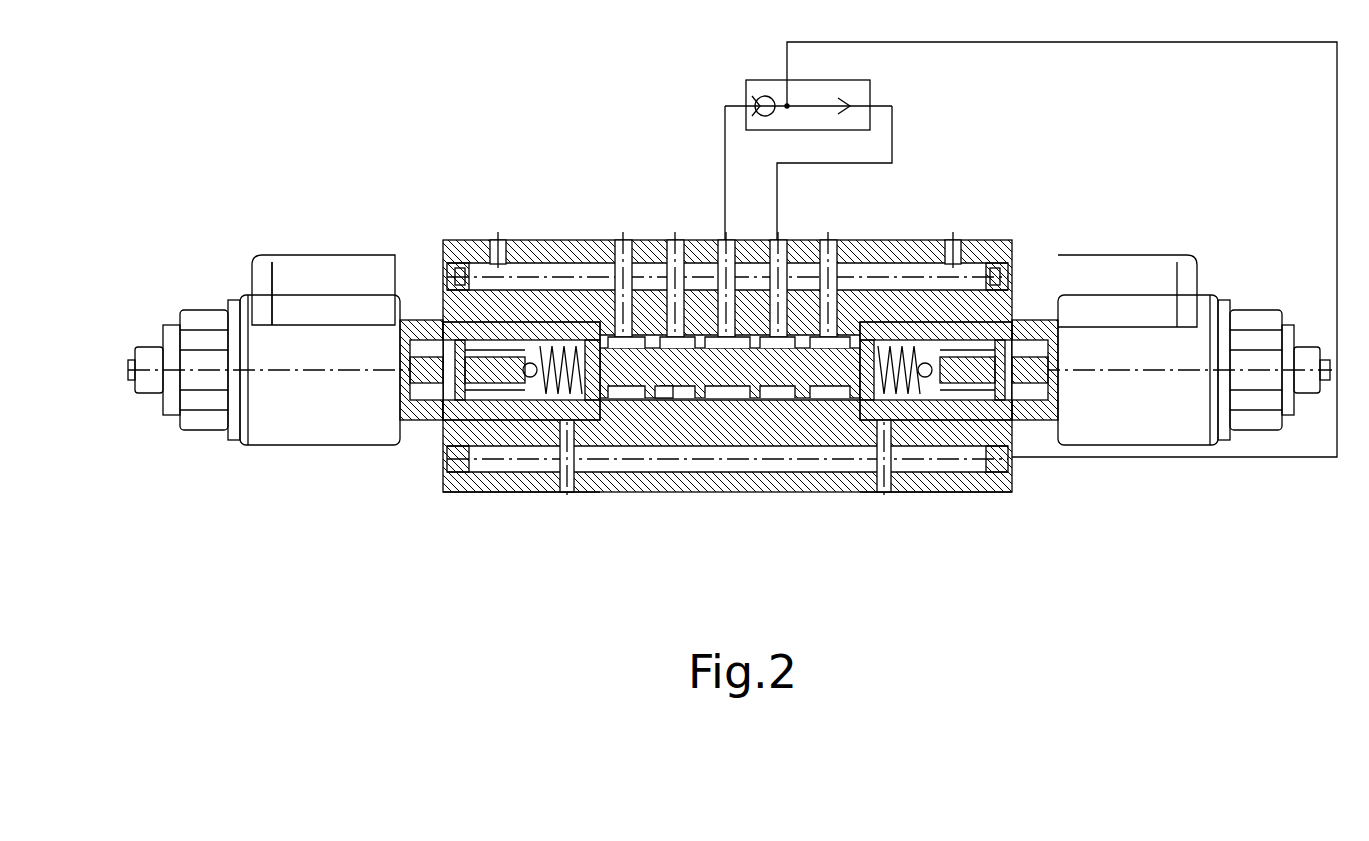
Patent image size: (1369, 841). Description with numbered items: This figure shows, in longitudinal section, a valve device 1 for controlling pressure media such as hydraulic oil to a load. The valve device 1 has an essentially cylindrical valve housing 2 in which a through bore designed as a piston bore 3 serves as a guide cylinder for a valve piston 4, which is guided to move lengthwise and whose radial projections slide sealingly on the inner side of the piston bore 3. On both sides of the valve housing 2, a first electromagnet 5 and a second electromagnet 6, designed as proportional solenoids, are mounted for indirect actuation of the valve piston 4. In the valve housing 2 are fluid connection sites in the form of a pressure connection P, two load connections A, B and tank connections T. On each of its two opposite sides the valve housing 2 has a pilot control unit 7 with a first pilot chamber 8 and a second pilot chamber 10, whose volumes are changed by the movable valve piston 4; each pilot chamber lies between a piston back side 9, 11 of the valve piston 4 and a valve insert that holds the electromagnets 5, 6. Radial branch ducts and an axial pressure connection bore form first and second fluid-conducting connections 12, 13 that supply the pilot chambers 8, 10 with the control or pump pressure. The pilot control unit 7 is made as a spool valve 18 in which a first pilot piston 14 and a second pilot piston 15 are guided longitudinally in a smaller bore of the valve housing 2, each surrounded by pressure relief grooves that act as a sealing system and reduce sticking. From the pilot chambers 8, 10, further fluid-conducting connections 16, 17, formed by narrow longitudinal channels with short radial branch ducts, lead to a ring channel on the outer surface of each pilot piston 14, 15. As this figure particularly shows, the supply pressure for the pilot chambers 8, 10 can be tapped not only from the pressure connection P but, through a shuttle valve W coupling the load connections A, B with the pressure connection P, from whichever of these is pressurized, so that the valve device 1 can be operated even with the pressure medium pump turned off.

The valve device 1 is at (1188, 140).
The valve housing 2 is at (990, 240).
The piston bore 3 is at (712, 400).
The valve piston 4 is at (667, 400).
The first electromagnet 5 is at (338, 250).
The second electromagnet 6 is at (1195, 265).
The first pilot control unit 7 is at (410, 300).
The first pilot chamber 8 is at (557, 322).
The piston back side 9 is at (580, 400).
The second pilot chamber 10 is at (900, 330).
The piston back side 11 is at (933, 442).
The first fluid-conducting connection 12 is at (545, 498).
The second fluid-conducting connection 13 is at (905, 497).
The first pilot piston 14 is at (440, 405).
The second pilot piston 15 is at (1027, 418).
The fluid-conducting connection 16 is at (500, 404).
The fluid-conducting connection 17 is at (950, 402).
The spool valve 18 is at (473, 318).
The shuttle valve W is at (860, 80).
The tank connection T is at (622, 240).
The load connection A is at (674, 240).
The pressure connection P is at (724, 240).
The load connection B is at (780, 240).